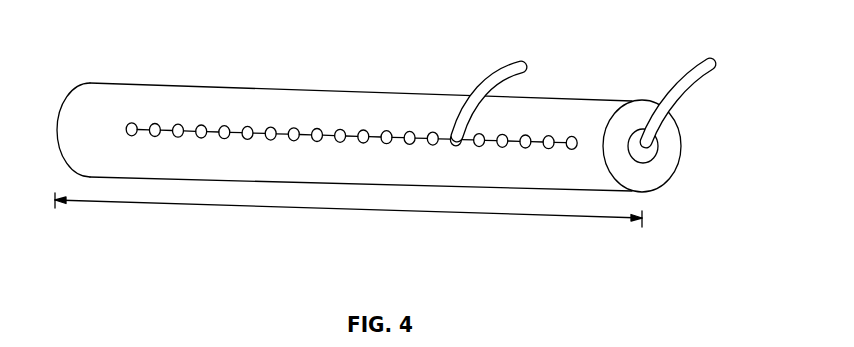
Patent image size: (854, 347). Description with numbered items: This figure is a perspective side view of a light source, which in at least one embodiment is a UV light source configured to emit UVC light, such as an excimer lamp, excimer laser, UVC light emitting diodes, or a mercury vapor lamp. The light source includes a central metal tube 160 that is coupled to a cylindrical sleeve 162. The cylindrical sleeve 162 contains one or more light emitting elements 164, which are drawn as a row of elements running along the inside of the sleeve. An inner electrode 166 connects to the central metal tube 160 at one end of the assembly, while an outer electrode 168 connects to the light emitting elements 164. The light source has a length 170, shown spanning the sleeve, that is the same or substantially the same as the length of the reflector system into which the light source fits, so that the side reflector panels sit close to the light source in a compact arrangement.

The central metal tube 160 is at (658, 150).
The cylindrical sleeve 162 is at (565, 98).
The light emitting elements 164 is at (128, 123).
The inner electrode 166 is at (703, 73).
The outer electrode 168 is at (477, 83).
The length 170 is at (390, 213).